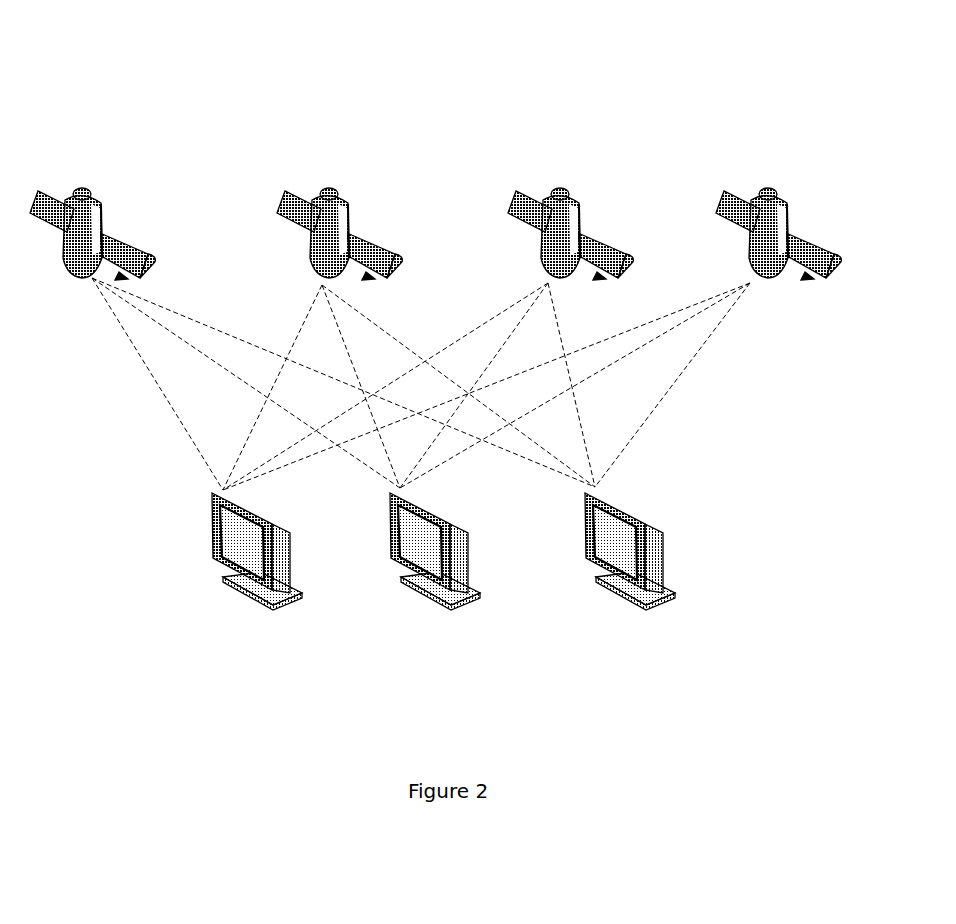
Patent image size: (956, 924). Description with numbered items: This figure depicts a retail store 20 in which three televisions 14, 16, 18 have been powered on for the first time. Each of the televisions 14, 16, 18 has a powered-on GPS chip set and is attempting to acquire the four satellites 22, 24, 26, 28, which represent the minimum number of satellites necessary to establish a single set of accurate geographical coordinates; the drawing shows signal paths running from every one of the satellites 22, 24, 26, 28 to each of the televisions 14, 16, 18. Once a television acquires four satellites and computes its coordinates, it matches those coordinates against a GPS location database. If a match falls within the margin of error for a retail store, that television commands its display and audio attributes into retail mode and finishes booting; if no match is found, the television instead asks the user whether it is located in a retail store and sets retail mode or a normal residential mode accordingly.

The retail store 20 is at (420, 60).
The satellite 22 is at (85, 170).
The satellite 24 is at (332, 170).
The satellite 26 is at (563, 170).
The satellite 28 is at (771, 170).
The television 14 is at (276, 628).
The television 16 is at (456, 628).
The television 18 is at (648, 628).